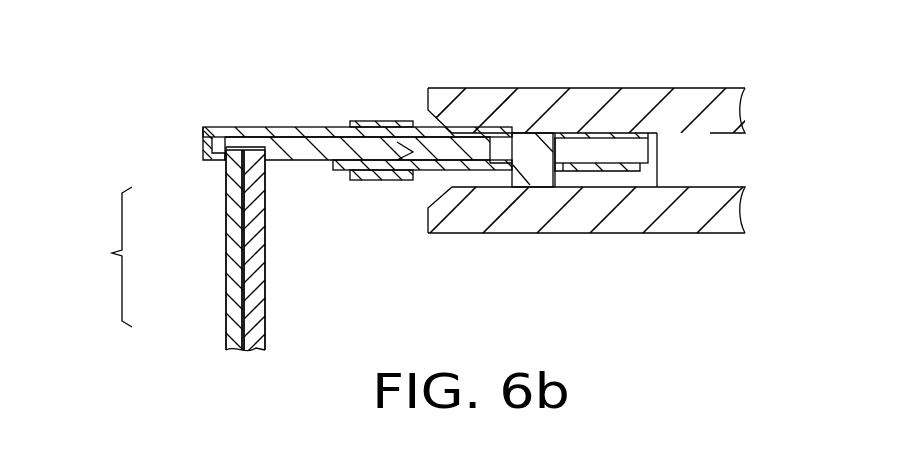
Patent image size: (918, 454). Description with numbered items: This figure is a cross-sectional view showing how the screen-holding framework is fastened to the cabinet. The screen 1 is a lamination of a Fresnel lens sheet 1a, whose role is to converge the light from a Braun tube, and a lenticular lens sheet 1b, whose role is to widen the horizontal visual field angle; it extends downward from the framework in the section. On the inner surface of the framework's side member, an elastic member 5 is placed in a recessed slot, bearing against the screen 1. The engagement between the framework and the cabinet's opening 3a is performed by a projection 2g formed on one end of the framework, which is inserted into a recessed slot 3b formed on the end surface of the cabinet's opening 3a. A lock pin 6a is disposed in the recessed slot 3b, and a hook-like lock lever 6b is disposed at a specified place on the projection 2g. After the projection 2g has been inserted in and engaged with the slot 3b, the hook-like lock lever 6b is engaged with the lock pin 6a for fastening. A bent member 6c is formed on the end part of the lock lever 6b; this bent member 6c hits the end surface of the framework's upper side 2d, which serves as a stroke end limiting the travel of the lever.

The screen 1 is at (115, 257).
The Fresnel lens sheet 1a is at (250, 285).
The lenticular lens sheet 1b is at (232, 252).
The framework's upper side 2d is at (302, 150).
The projection 2g is at (602, 150).
The cabinet's opening 3a is at (710, 133).
The recessed slot 3b is at (648, 173).
The elastic member 5 is at (238, 146).
The lock pin 6a is at (535, 158).
The lock lever 6b is at (278, 127).
The bent member 6c is at (203, 140).